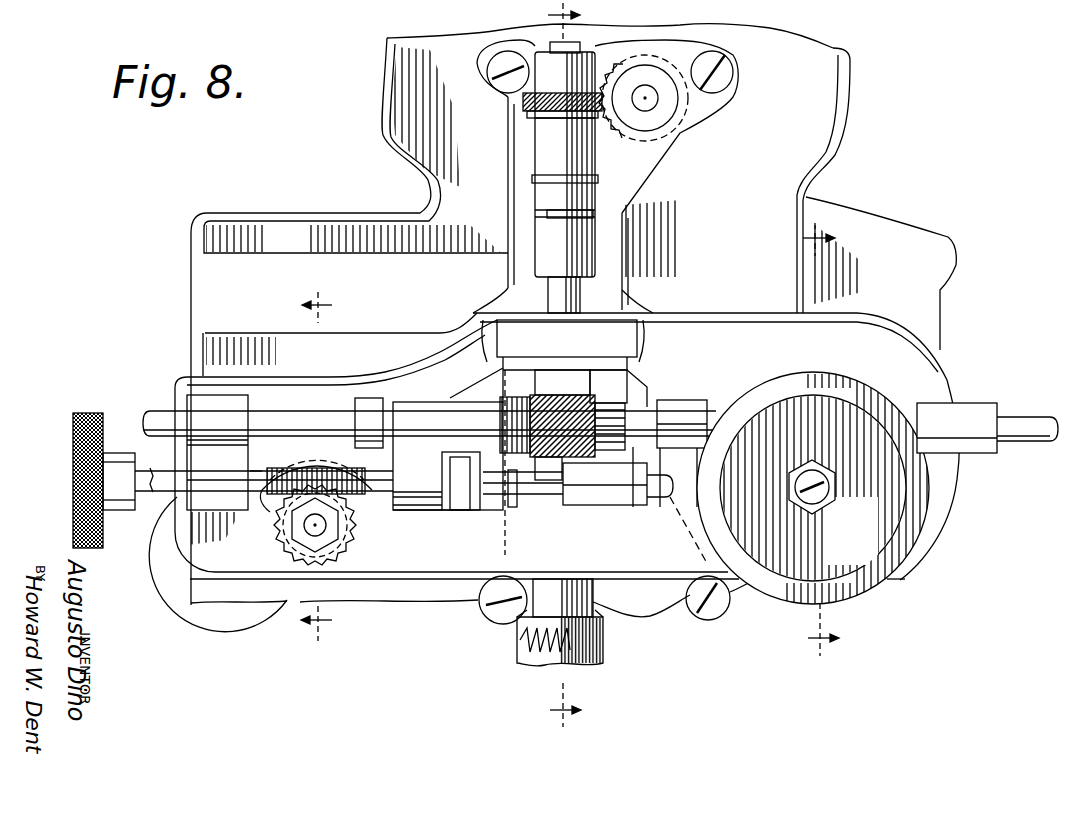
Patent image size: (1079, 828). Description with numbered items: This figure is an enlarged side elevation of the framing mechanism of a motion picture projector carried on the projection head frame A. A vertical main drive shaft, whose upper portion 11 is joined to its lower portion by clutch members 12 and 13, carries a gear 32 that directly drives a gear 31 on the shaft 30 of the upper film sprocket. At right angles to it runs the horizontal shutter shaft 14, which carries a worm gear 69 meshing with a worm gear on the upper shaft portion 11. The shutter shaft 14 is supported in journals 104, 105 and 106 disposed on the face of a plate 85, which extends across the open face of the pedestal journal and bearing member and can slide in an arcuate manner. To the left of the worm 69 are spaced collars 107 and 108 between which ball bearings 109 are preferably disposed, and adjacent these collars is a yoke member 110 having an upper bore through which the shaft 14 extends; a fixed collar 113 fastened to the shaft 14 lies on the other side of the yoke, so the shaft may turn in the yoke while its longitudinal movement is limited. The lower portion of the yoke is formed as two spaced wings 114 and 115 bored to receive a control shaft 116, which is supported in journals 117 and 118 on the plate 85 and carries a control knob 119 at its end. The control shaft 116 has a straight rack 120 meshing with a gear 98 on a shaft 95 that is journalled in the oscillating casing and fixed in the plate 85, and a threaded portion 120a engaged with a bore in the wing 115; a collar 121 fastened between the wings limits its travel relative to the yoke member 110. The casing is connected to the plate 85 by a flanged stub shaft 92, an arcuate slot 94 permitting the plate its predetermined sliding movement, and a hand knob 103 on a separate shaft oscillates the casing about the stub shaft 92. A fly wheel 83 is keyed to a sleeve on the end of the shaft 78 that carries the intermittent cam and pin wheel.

The projection head frame A is at (573, 314).
The upper portion of the main drive shaft 11 is at (576, 288).
The clutch member 12 is at (630, 635).
The clutch member 13 is at (603, 656).
The shutter shaft 14 is at (713, 415).
The shaft of the upper film sprocket 30 is at (642, 106).
The gear 31 is at (675, 132).
The gear 32 is at (528, 106).
The worm gear 69 is at (562, 414).
The shaft 78 is at (828, 484).
The fly wheel 83 is at (813, 488).
The plate 85 is at (567, 468).
The flanged stub shaft 92 is at (348, 458).
The arcuate slot 94 is at (312, 530).
The shaft 95 is at (300, 540).
The gear 98 is at (268, 514).
The hand knob 103 is at (243, 621).
The journal 104 is at (973, 410).
The journal 105 is at (682, 398).
The journal 106 is at (226, 410).
The collar 107 is at (562, 427).
The collar 108 is at (542, 359).
The ball bearings 109 is at (517, 403).
The yoke member 110 is at (448, 456).
The fixed collar 113 is at (378, 400).
The wing 114 is at (392, 508).
The wing 115 is at (483, 501).
The control shaft 116 is at (553, 500).
The journal 117 is at (627, 500).
The journal 118 is at (223, 482).
The control knob 119 is at (73, 491).
The straight rack 120 is at (262, 476).
The threaded portion 120a is at (513, 495).
The collar 121 is at (462, 511).